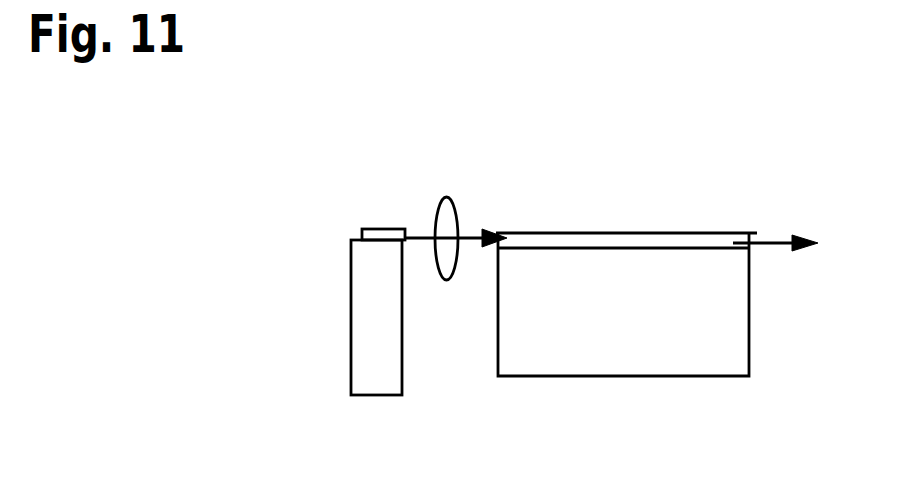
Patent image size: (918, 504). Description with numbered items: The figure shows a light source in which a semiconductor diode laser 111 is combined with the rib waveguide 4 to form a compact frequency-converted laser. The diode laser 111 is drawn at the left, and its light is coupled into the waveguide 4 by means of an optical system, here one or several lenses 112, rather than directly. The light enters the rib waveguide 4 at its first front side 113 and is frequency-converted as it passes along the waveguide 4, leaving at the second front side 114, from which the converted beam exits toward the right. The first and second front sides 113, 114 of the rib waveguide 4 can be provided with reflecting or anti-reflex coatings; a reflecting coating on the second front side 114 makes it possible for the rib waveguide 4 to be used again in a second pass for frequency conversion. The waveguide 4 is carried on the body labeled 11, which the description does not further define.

The diode laser 111 is at (383, 238).
The lens 112 is at (445, 258).
The first front side 113 is at (494, 232).
The rib waveguide 4 is at (632, 243).
The second front side 114 is at (752, 240).
The substrate / optical element 11 is at (702, 352).